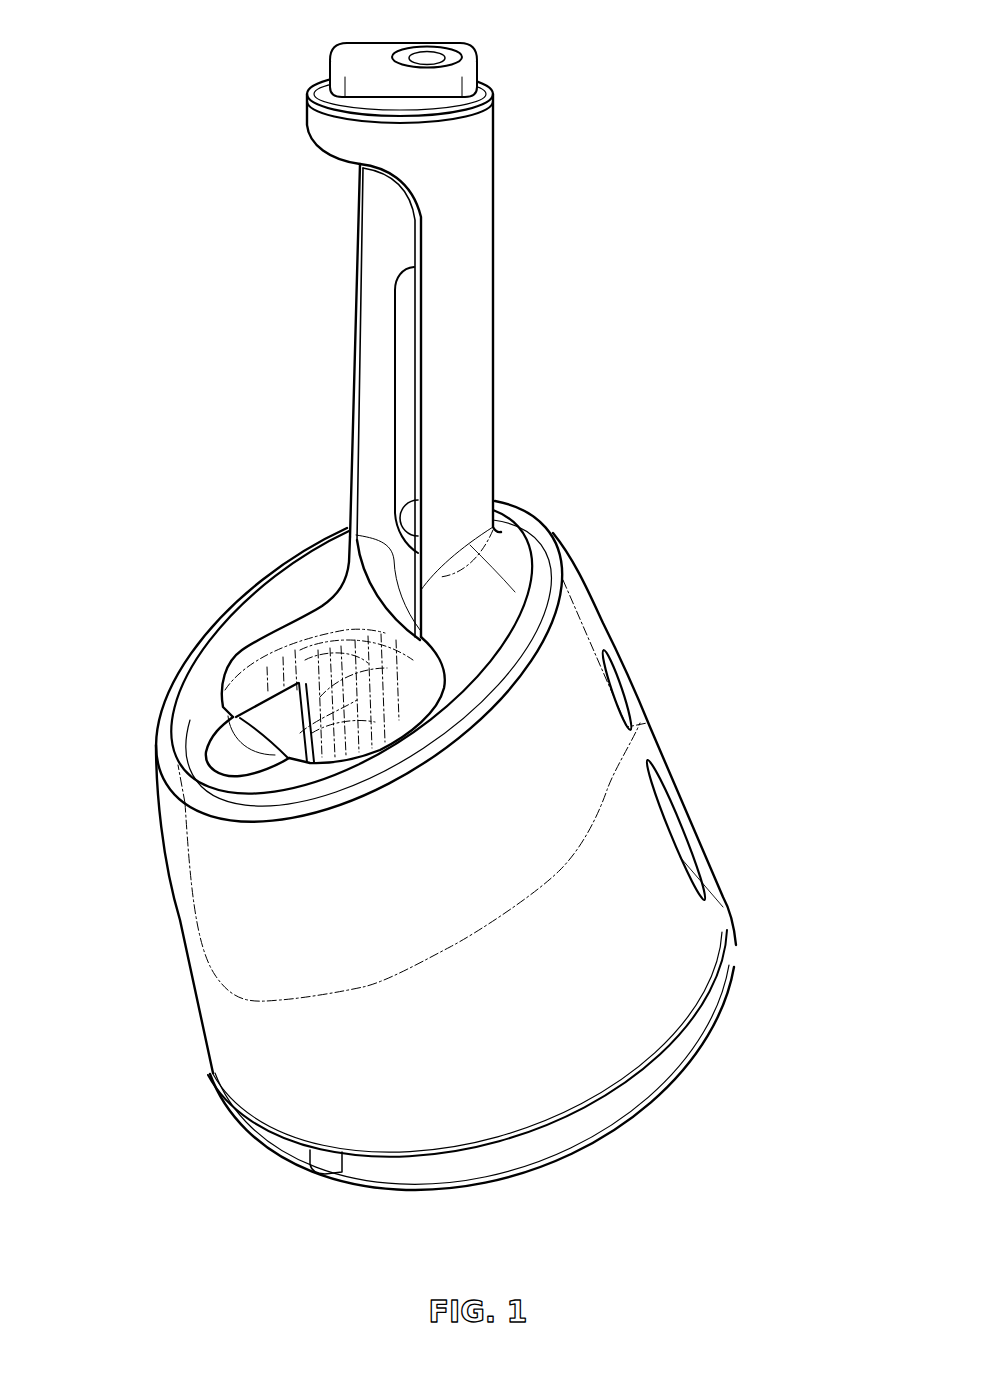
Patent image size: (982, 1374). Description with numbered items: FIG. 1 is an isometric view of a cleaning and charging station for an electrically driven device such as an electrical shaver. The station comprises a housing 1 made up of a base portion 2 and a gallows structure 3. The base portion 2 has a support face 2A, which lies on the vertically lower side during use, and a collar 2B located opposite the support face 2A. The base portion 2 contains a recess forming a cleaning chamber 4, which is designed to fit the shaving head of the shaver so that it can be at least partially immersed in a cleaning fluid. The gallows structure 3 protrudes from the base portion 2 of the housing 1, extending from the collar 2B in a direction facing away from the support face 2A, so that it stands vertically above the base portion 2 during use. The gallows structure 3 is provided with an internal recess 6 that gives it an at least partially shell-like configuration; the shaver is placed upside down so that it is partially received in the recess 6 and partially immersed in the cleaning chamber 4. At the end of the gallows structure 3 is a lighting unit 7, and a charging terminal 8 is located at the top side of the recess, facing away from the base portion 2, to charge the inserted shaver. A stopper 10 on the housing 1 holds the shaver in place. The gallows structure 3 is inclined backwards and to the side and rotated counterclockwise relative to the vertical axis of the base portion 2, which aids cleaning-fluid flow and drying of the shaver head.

The housing 1 is at (455, 845).
The base portion 2 is at (465, 845).
The support face 2A is at (626, 1122).
The collar 2B is at (547, 590).
The gallows structure 3 is at (371, 388).
The cleaning chamber 4 is at (268, 655).
The recess 6 is at (380, 430).
The lighting unit 7 is at (322, 70).
The charging terminal 8 is at (386, 176).
The stopper 10 is at (218, 747).